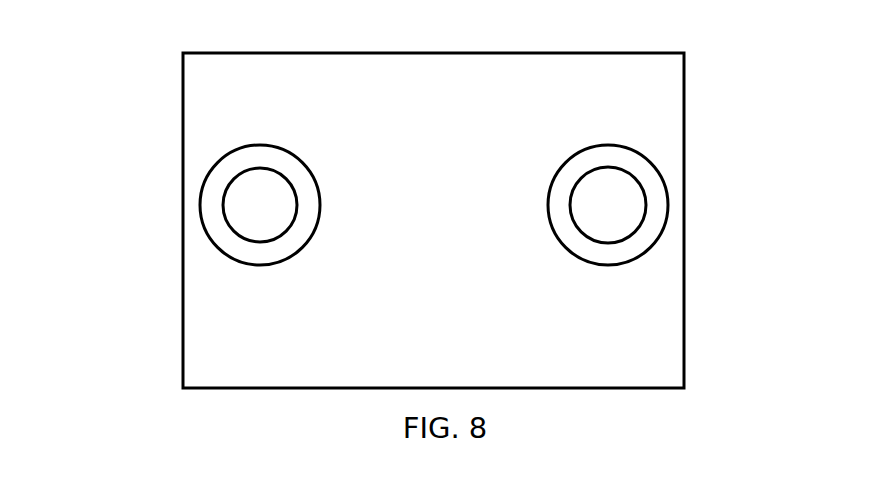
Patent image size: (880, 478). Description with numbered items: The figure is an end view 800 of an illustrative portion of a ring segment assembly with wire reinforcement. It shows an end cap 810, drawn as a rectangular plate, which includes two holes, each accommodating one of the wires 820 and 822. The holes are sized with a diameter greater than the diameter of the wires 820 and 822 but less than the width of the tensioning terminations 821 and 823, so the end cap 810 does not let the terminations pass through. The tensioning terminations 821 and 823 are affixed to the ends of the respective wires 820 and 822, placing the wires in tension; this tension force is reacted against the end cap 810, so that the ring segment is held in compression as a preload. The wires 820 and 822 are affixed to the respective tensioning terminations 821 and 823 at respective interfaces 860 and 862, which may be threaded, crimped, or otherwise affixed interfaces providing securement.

The device assembly 800 is at (428, 33).
The end cap 810 is at (413, 105).
The wire 820 is at (236, 216).
The tensioning termination 821 is at (203, 222).
The wire 822 is at (585, 216).
The tensioning termination 823 is at (668, 195).
The interface 860 is at (180, 200).
The interface 862 is at (644, 169).